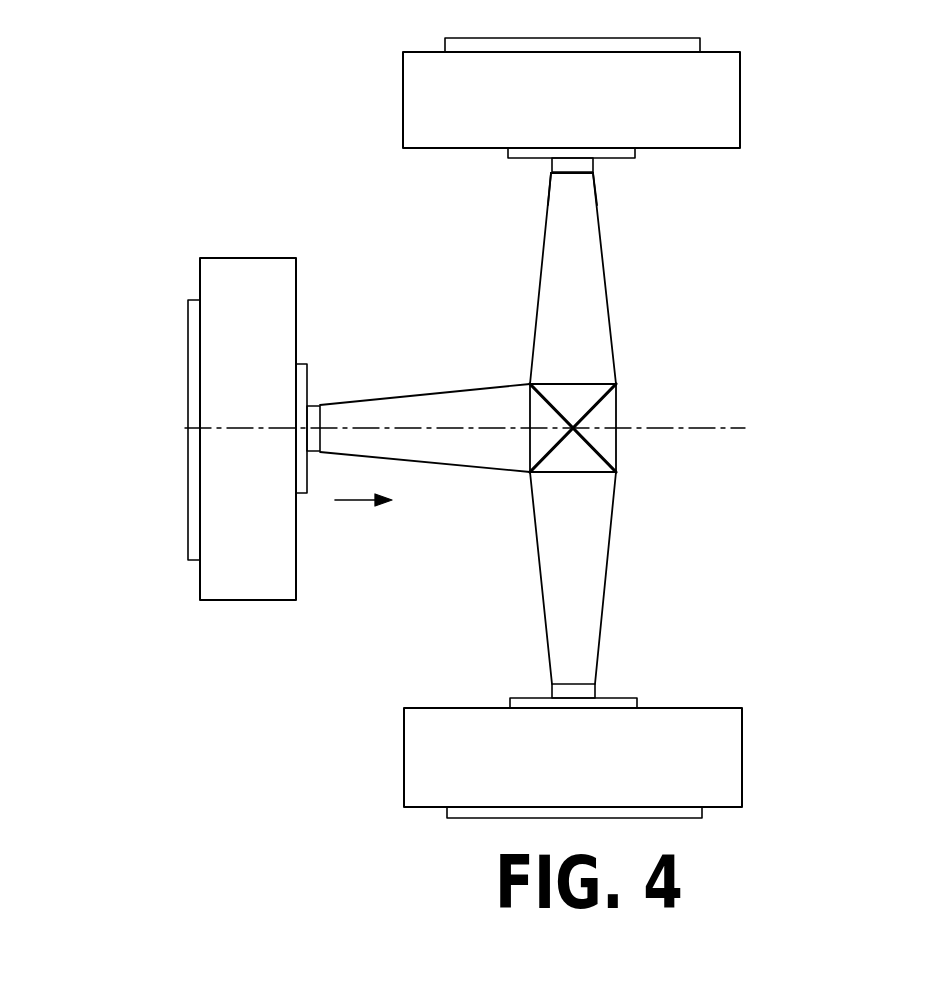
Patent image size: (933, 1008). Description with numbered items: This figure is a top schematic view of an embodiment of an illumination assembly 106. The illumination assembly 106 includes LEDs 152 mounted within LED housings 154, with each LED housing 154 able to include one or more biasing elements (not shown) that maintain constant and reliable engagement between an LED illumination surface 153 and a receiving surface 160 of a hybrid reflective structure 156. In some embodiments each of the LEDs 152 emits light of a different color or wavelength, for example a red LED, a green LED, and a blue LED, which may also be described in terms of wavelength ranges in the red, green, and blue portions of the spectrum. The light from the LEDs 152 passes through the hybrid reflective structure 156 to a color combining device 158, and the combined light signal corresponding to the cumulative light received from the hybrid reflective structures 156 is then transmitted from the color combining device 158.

The illumination assembly 106 is at (824, 156).
The LED housing 154 is at (420, 112).
The LED 152 is at (584, 165).
The LED illumination surface 153 is at (562, 173).
The hybrid reflective structure 156 is at (588, 313).
The receiving surface 160 is at (578, 178).
The color combining device 158 is at (608, 415).